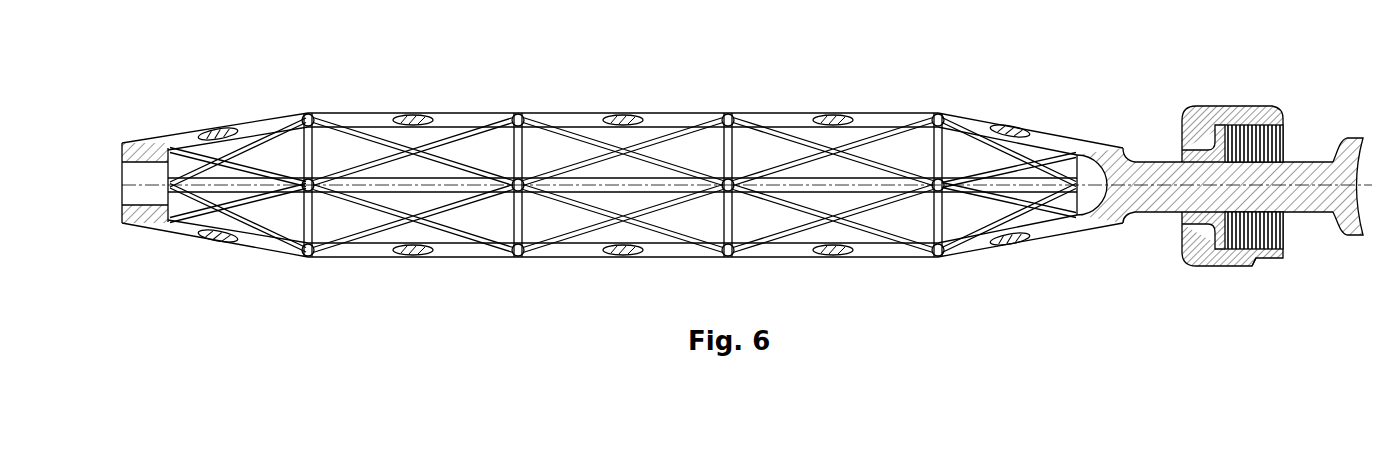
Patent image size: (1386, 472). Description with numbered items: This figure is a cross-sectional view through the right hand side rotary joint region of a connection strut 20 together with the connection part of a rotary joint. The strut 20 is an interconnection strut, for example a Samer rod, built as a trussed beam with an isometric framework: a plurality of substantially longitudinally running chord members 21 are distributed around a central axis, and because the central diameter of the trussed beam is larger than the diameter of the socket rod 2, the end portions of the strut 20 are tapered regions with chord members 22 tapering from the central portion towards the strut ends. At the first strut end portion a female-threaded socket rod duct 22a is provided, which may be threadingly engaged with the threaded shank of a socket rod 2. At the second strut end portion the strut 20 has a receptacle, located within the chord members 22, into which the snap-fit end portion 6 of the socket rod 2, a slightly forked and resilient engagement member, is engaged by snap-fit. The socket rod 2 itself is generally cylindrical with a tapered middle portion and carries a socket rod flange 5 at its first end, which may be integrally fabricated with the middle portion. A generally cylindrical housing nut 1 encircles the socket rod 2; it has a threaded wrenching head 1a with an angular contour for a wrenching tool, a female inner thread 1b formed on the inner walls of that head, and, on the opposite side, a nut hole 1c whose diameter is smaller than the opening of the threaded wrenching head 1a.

The connection strut 20 is at (700, 95).
The chord members 21 is at (460, 113).
The tapering chord members 22 is at (268, 118).
The female-threaded socket rod duct 22a is at (155, 194).
The snap-fit end portion 6 is at (1028, 134).
The socket rod 2 is at (1298, 160).
The socket rod flange 5 is at (1345, 139).
The housing nut 1 is at (1217, 268).
The threaded wrenching head 1a is at (1265, 260).
The inner thread 1b is at (1263, 126).
The nut hole 1c is at (1181, 154).